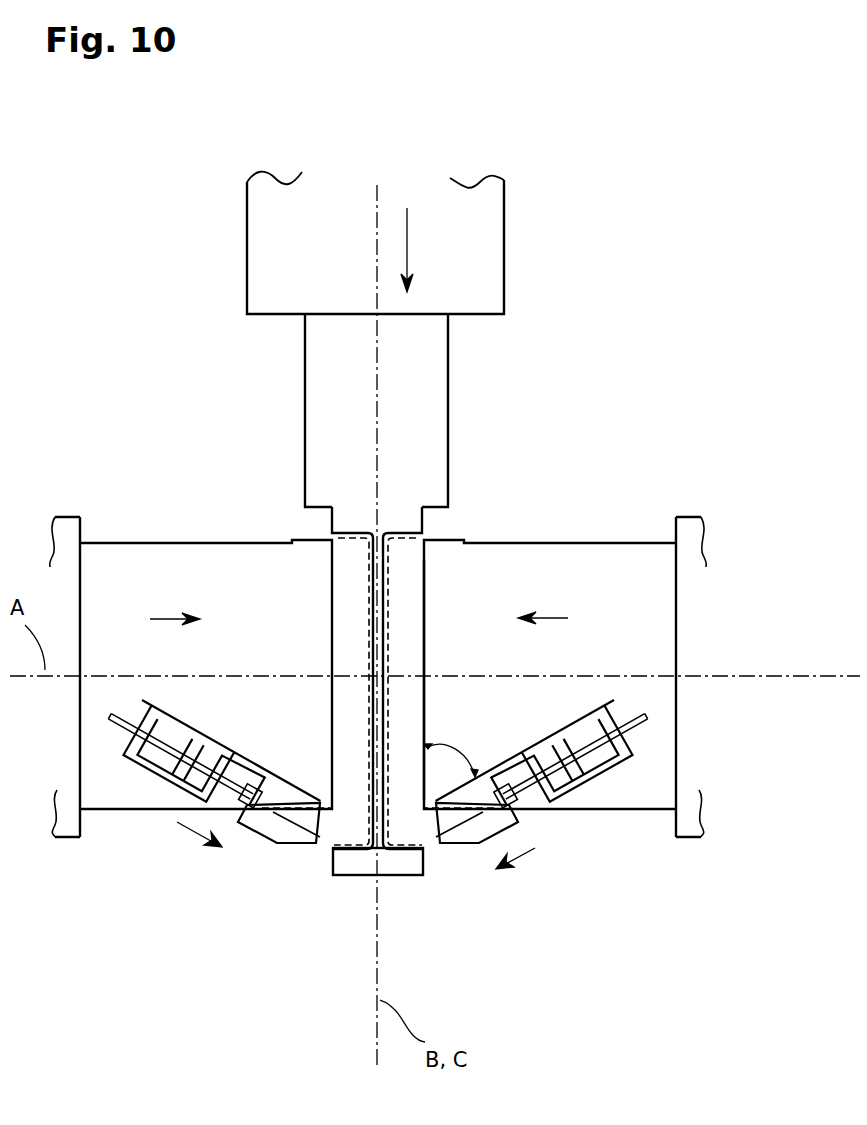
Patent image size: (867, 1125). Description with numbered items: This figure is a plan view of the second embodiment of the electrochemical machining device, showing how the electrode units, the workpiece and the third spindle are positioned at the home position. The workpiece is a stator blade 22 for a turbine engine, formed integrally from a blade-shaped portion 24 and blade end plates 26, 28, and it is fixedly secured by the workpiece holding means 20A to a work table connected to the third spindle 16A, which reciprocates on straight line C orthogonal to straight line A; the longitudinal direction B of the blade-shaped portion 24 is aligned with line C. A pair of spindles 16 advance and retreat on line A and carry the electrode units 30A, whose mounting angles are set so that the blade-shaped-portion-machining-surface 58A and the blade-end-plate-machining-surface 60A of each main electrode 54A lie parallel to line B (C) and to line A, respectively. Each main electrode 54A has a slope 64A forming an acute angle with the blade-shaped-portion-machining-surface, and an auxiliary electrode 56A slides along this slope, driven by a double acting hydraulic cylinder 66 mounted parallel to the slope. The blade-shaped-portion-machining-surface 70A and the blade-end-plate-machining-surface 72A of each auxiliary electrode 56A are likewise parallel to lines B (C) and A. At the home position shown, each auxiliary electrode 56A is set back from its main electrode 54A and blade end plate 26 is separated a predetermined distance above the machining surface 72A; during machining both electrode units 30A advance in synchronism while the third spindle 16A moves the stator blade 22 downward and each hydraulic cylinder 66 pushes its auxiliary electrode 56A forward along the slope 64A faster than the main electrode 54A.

The third spindle 16A is at (505, 258).
The workpiece holding means 20A is at (448, 386).
The blade end plate 26 is at (392, 540).
The blade end plate 28 is at (432, 862).
The blade-shaped portion 24 is at (400, 862).
The stator blade 22 is at (351, 878).
The main electrode 54A is at (192, 543).
The spindle 16 is at (72, 517).
The electrode unit 30A is at (419, 687).
The slope 64A is at (508, 768).
The double acting hydraulic cylinder 66 is at (620, 775).
The auxiliary electrode 56A is at (258, 838).
The blade-shaped-portion-machining-surface 70A is at (430, 862).
The blade-end-plate-machining-surface 72A is at (452, 843).
The blade-shaped-portion-machining-surface 58A is at (422, 600).
The blade-end-plate-machining-surface 60A is at (440, 537).